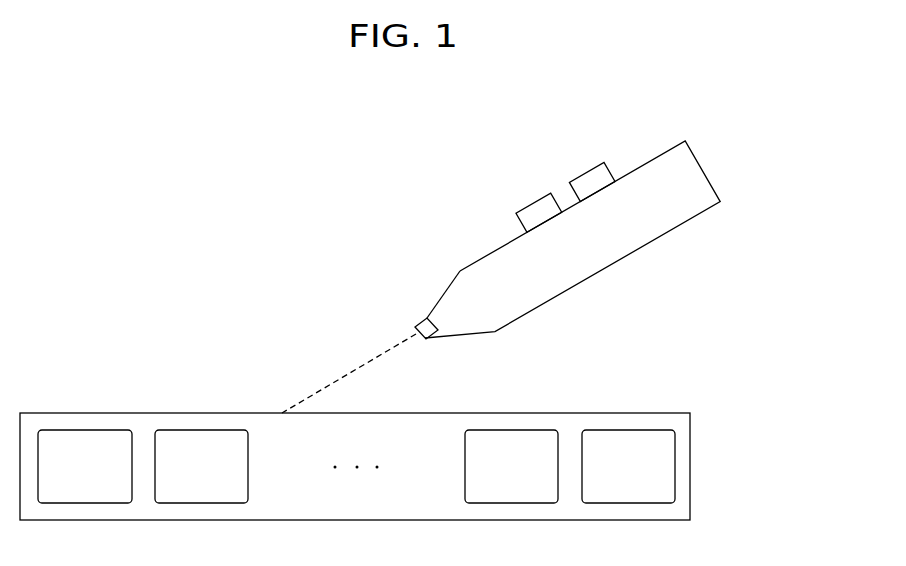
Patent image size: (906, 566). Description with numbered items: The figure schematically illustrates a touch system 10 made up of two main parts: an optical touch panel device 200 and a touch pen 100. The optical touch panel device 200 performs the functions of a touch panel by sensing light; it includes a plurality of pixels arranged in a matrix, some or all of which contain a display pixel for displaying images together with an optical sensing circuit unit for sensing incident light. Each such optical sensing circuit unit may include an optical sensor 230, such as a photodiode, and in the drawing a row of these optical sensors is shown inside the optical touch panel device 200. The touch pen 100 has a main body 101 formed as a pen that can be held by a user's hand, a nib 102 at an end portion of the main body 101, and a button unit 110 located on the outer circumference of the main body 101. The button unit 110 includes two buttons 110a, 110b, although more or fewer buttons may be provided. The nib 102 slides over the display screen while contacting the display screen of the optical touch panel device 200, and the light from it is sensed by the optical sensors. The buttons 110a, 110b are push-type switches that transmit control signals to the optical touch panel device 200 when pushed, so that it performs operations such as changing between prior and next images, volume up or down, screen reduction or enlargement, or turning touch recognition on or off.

The touch system 10 is at (754, 159).
The touch pen 100 is at (607, 267).
The main body 101 is at (492, 267).
The nib 102 is at (420, 323).
The button unit 110 is at (573, 118).
The button 110a is at (533, 207).
The button 110b is at (587, 175).
The optical touch panel device 200 is at (682, 468).
The optical sensor 230 is at (628, 430).